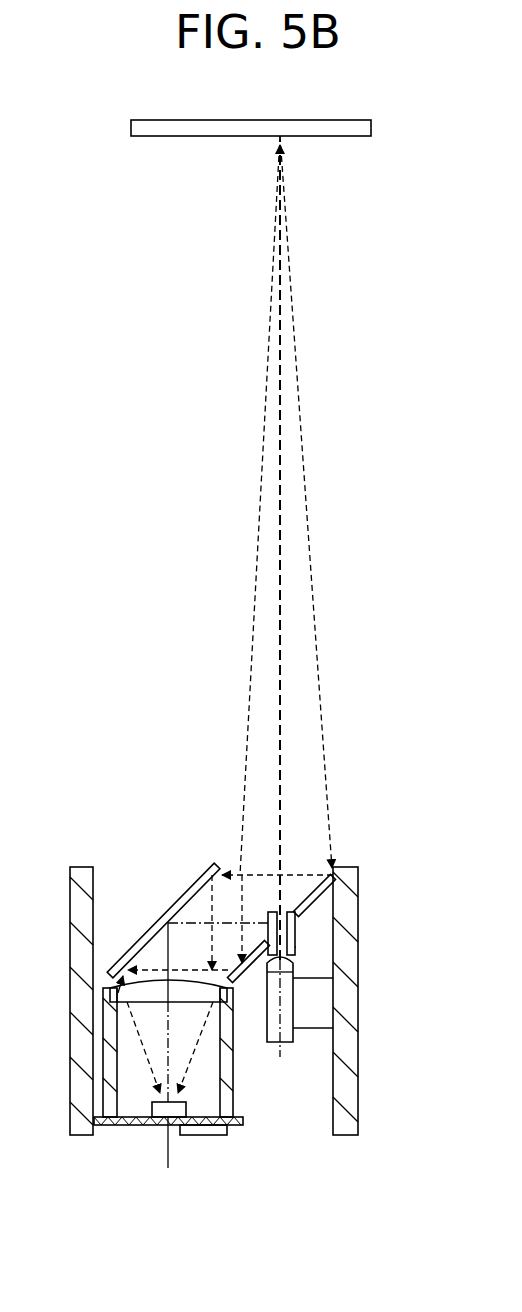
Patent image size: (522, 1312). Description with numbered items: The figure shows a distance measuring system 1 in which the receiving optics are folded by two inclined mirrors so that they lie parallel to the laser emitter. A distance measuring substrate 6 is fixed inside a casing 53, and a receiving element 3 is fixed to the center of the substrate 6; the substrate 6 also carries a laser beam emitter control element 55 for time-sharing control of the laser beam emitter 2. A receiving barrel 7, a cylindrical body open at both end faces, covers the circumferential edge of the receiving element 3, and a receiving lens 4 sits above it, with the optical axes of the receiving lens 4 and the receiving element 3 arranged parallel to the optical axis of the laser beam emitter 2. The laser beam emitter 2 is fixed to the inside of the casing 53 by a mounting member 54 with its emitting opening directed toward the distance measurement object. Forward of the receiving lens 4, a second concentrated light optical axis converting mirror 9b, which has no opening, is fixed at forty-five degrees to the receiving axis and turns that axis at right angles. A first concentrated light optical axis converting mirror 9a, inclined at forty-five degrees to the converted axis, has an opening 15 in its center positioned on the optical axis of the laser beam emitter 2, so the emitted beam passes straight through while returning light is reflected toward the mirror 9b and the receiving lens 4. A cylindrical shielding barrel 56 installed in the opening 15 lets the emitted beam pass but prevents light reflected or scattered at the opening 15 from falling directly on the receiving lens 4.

The distance measuring system 1 is at (70, 845).
The laser beam emitter 2 is at (272, 1031).
The receiving element 3 is at (158, 1128).
The receiving lens 4 is at (110, 991).
The distance measuring substrate 6 is at (107, 1126).
The receiving barrel 7 is at (113, 1062).
The first concentrated light optical axis converting mirror 9a is at (322, 888).
The second concentrated light optical axis converting mirror 9b is at (187, 893).
The opening 15 is at (294, 933).
The casing 53 is at (338, 1128).
The mounting member 54 is at (307, 1023).
The laser beam emitter control element 55 is at (197, 1136).
The cylindrical shielding barrel 56 is at (296, 947).